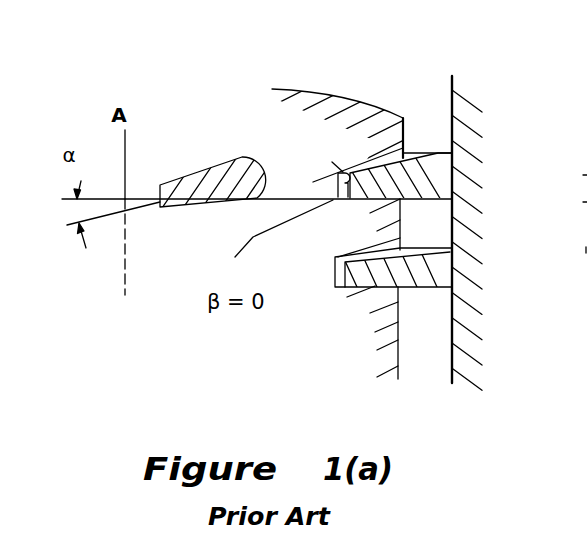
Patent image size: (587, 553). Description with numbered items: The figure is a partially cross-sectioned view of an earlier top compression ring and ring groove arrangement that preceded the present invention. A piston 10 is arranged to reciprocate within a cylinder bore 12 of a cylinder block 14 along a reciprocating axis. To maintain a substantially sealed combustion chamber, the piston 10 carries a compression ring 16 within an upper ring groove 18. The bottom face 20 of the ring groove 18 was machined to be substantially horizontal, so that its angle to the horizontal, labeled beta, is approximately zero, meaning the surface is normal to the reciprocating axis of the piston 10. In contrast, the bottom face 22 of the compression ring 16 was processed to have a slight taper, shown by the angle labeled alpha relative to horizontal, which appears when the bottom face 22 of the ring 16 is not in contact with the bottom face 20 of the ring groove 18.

The piston 10 is at (348, 97).
The cylinder bore 12 is at (433, 152).
The cylinder block 14 is at (476, 117).
The compression ring 16 is at (212, 168).
The upper ring groove 18 is at (341, 155).
The bottom face of the ring groove 20 is at (342, 202).
The bottom face of the ring 22 is at (185, 207).